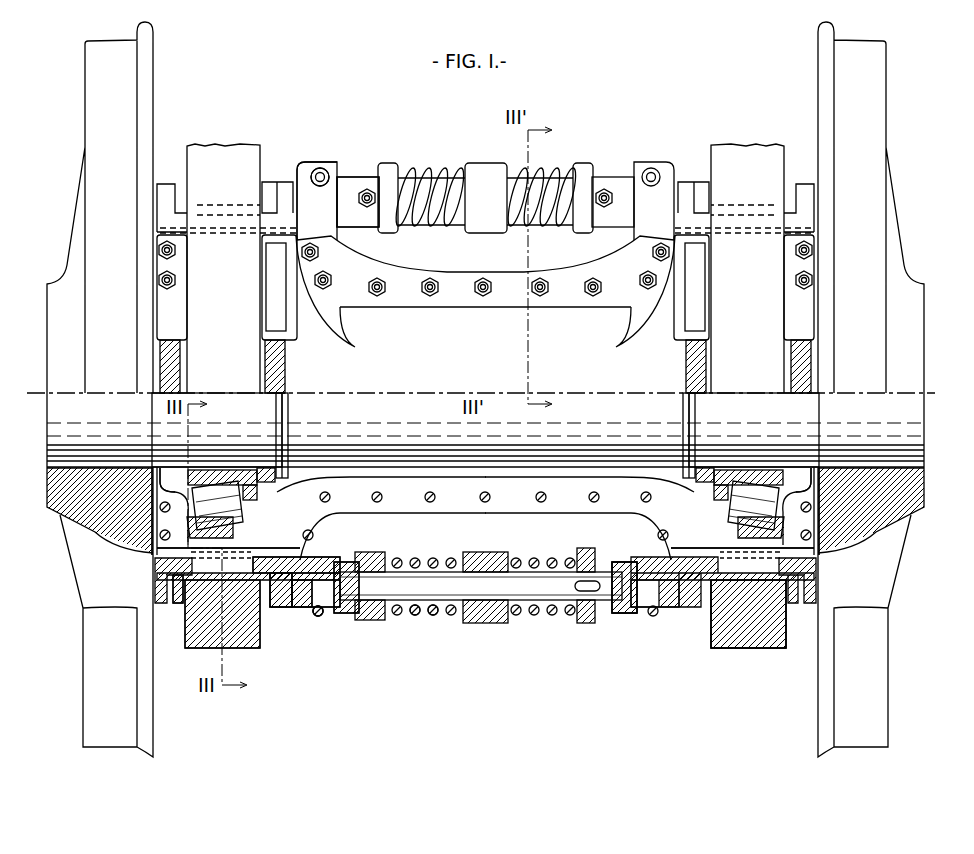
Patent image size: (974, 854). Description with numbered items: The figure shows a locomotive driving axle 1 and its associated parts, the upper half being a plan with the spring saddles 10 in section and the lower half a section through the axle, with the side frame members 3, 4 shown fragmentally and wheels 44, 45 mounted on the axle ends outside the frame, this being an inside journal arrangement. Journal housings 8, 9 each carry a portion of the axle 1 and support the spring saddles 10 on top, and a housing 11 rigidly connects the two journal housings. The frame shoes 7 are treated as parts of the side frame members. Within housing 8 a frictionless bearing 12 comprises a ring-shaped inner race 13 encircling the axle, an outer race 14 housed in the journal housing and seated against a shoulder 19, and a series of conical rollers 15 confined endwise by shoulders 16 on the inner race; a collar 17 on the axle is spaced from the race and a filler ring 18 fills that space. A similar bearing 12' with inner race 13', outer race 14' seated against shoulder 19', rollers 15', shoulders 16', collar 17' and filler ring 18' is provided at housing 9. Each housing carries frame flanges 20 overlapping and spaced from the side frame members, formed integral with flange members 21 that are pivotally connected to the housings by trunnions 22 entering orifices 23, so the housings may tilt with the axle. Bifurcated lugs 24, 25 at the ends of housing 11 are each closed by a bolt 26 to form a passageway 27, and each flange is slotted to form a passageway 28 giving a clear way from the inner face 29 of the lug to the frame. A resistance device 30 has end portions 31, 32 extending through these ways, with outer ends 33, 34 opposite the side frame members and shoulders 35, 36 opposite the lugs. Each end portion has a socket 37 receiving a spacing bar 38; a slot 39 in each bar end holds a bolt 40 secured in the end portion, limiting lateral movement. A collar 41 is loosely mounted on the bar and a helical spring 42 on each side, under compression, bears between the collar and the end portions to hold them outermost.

The driving axle 1 is at (395, 432).
The side frame member 3 is at (183, 684).
The side frame member 4 is at (758, 684).
The shoe 7 is at (272, 600).
The journal housing 8 is at (170, 318).
The journal housing 9 is at (805, 318).
The spring saddle 10 is at (163, 392).
The housing 11 is at (508, 306).
The frictionless bearing 12 is at (223, 493).
The bearing 12' is at (743, 488).
The inner race 13 is at (222, 469).
The inner race 13' is at (748, 463).
The outer race 14 is at (235, 536).
The outer race 14' is at (728, 533).
The conical rollers 15 is at (229, 509).
The conical rollers 15' is at (738, 505).
The shoulders 16 is at (321, 487).
The shoulders 16' is at (652, 482).
The collar 17 is at (306, 435).
The collar 17' is at (658, 435).
The filler ring 18 is at (284, 480).
The filler ring 18' is at (682, 478).
The shoulder 19 is at (196, 524).
The shoulder 19' is at (767, 525).
The frame flanges 20 is at (165, 184).
The flange members 21 is at (195, 222).
The trunnions 22 is at (205, 620).
The orifices 23 is at (207, 572).
The bifurcated lugs 24 is at (300, 178).
The bifurcated lugs 25 is at (660, 182).
The bolt 26 is at (324, 176).
The passageway 27 is at (313, 568).
The passageway 28 is at (305, 195).
The inner face 29 is at (362, 220).
The device 30 is at (452, 196).
The end portion 31 is at (360, 626).
The end portion 32 is at (622, 616).
The outer end 33 is at (302, 610).
The outer end 34 is at (722, 652).
The shoulder 35 is at (324, 614).
The shoulder 36 is at (636, 616).
The socket 37 is at (374, 562).
The spacing bar 38 is at (415, 575).
The slot 39 is at (585, 596).
The bolt 40 is at (600, 590).
The collar 41 is at (483, 555).
The helical spring 42 is at (418, 616).
The wheel 44 is at (100, 194).
The wheel 45 is at (868, 236).